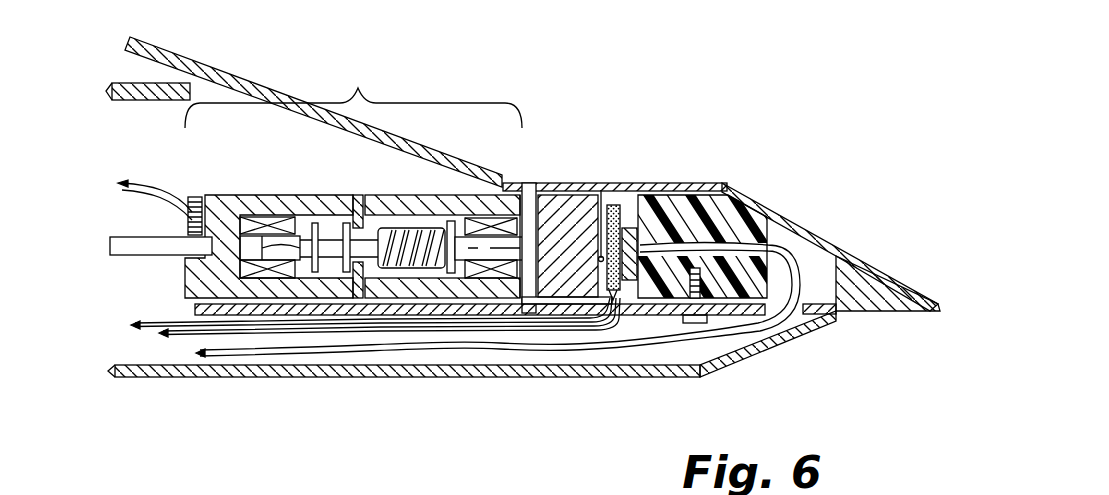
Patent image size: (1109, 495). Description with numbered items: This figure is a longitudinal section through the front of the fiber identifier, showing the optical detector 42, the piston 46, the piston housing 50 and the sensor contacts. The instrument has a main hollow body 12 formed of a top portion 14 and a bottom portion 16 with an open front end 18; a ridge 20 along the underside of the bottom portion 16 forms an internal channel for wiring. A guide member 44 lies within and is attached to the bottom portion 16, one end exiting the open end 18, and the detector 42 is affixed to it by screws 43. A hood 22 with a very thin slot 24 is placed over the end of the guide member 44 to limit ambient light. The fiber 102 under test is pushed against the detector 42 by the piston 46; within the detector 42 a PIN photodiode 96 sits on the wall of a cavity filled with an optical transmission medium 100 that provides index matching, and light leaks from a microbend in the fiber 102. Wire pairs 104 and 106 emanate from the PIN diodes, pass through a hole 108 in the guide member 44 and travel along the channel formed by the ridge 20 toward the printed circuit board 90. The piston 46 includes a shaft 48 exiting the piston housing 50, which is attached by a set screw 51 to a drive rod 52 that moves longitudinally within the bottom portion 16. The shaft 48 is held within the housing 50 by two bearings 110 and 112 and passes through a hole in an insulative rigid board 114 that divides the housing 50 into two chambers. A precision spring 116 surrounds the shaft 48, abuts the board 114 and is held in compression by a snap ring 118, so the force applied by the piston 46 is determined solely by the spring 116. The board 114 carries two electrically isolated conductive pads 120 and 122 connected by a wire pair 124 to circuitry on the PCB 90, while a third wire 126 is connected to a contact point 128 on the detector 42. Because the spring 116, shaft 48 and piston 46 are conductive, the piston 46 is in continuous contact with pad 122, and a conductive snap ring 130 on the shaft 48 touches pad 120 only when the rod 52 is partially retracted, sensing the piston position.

The main hollow body 12 is at (248, 76).
The top portion 14 is at (195, 62).
The bottom portion 16 is at (146, 381).
The open front end 18 is at (809, 207).
The ridge 20 is at (262, 378).
The hood 22 is at (858, 257).
The slot 24 is at (543, 205).
The optical detector 42 is at (739, 220).
The screws 43 is at (735, 322).
The guide member 44 is at (862, 313).
The piston 46 is at (562, 203).
The piston shaft 48 is at (487, 203).
The piston housing 50 is at (353, 92).
The set screw 51 is at (200, 196).
The drive rod 52 is at (148, 237).
The printed circuit board 90 is at (120, 101).
The PIN photodiode 96 is at (715, 207).
The optical transmission medium 100 is at (665, 195).
The fiber under test 102 is at (611, 200).
The wire pair 104 is at (570, 335).
The wire pair 106 is at (697, 352).
The hole 108 is at (798, 320).
The bearing 110 is at (524, 262).
The bearing 112 is at (245, 268).
The insulative rigid board 114 is at (350, 196).
The precision spring 116 is at (428, 253).
The snap ring 118 is at (433, 200).
The conductive pad 120 is at (340, 196).
The conductive pad 122 is at (360, 196).
The wire pair 124 is at (140, 187).
The third wire 126 is at (627, 322).
The contact point 128 is at (636, 348).
The conductive snap ring 130 is at (240, 256).